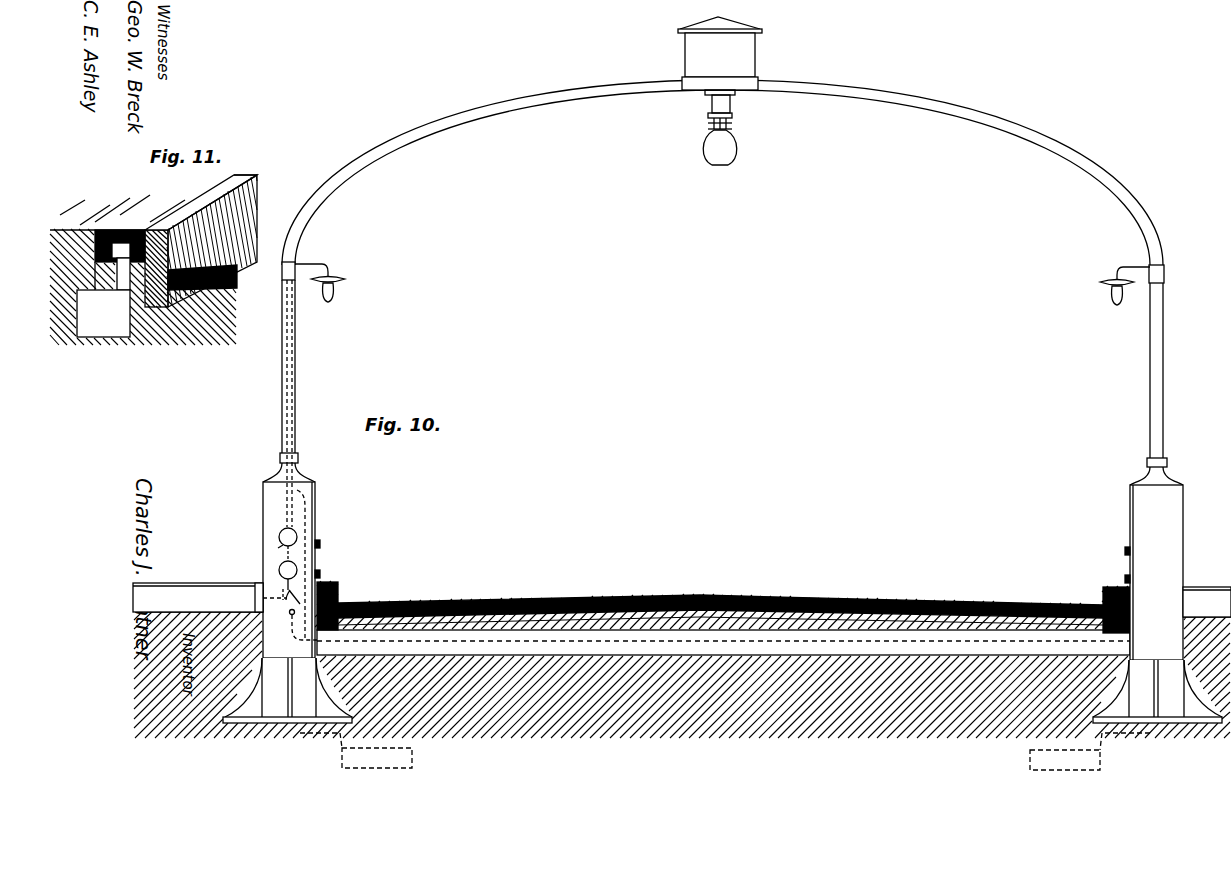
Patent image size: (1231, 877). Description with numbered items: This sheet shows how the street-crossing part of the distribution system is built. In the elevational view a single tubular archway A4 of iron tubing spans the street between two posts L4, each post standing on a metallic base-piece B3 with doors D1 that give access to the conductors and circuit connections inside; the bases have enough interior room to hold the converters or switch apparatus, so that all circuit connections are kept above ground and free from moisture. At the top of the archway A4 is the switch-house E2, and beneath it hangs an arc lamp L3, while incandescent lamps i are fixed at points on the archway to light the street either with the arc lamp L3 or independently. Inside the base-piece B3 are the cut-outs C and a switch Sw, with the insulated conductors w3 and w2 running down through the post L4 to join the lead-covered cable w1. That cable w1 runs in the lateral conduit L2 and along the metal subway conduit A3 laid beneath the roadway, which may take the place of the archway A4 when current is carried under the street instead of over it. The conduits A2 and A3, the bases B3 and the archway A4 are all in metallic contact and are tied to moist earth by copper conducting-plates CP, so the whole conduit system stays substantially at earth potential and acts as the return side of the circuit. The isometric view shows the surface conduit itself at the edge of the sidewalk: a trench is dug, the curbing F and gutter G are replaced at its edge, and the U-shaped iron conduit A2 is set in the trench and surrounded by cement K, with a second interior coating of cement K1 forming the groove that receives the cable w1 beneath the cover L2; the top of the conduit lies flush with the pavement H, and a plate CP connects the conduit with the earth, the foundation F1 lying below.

In FIG. 10, the lamp housing E2 is at (720, 53).
In FIG. 11, the arc lamp L3 is at (201, 241).
In FIG. 10, the arc lamp L3 is at (732, 127).
In FIG. 11, the archway A4 is at (95, 256).
In FIG. 10, the archway A4 is at (545, 100).
In FIG. 10, the incandescent lamp i is at (722, 284).
In FIG. 10, the post L4 is at (295, 345).
In FIG. 10, the base-piece B3 is at (266, 523).
In FIG. 10, the insulated conductor w3 is at (286, 510).
In FIG. 10, the wire w2 is at (306, 518).
In FIG. 10, the cut-out / fuse C is at (283, 553).
In FIG. 10, the door D1 is at (320, 557).
In FIG. 11, the curbing F is at (236, 212).
In FIG. 10, the curbing F is at (338, 590).
In FIG. 11, the gutter G is at (214, 280).
In FIG. 10, the gutter G is at (370, 612).
In FIG. 10, the switch Sw is at (294, 609).
In FIG. 11, the lead-covered cable w1 is at (127, 238).
In FIG. 10, the lead-covered cable w1 is at (651, 620).
In FIG. 10, the cover L2 is at (222, 584).
In FIG. 10, the conduit A2 is at (165, 597).
In FIG. 10, the subway conduit A3 is at (723, 642).
In FIG. 11, the conducting-plate CP is at (103, 313).
In FIG. 10, the conducting-plate CP is at (725, 751).
In FIG. 11, the pavement H is at (98, 232).
In FIG. 11, the interior cement coating K1 is at (112, 235).
In FIG. 11, the cement K is at (100, 276).
In FIG. 11, the foundation F1 is at (158, 322).